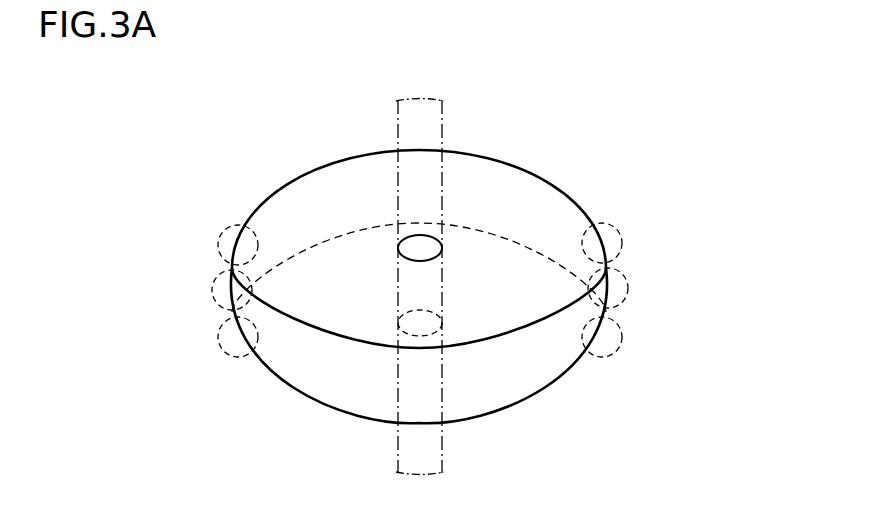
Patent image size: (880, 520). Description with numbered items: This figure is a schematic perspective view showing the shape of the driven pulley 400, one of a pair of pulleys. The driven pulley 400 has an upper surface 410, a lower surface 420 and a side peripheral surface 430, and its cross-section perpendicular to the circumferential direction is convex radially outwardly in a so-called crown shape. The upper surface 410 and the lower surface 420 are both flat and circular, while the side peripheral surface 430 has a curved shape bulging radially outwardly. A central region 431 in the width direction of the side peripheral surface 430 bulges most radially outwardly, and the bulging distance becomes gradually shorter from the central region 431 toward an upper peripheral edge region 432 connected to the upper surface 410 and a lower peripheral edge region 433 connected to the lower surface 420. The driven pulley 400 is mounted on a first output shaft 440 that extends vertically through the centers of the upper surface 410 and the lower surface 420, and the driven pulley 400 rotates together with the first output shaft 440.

The driven pulley 400 is at (286, 158).
The upper surface 410 is at (537, 195).
The lower surface 420 is at (509, 383).
The side peripheral surface 430 is at (132, 197).
The central region 431 is at (218, 288).
The upper peripheral edge region 432 is at (224, 234).
The lower peripheral edge region 433 is at (223, 342).
The first output shaft 440 is at (432, 117).